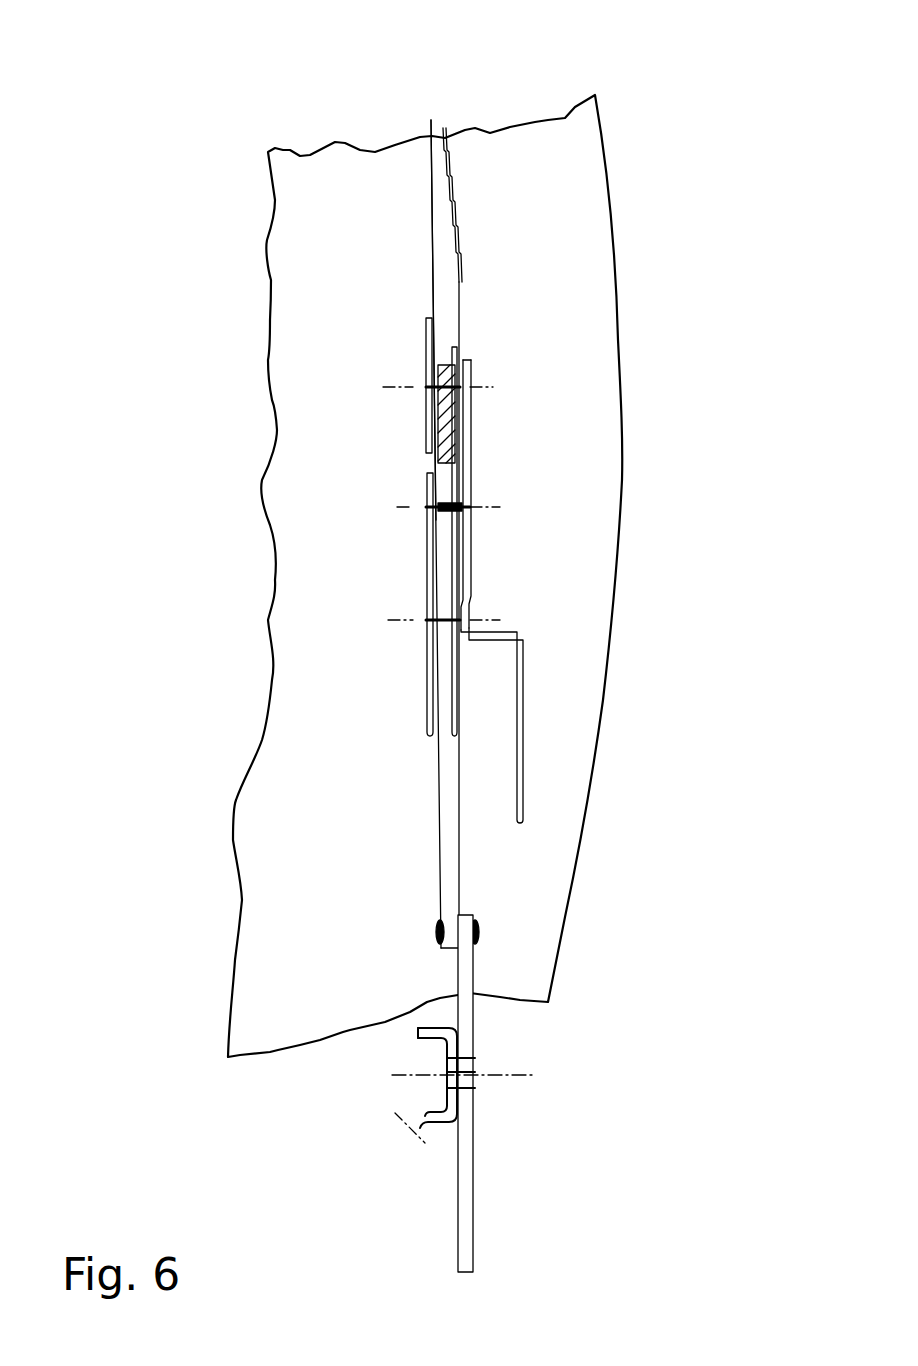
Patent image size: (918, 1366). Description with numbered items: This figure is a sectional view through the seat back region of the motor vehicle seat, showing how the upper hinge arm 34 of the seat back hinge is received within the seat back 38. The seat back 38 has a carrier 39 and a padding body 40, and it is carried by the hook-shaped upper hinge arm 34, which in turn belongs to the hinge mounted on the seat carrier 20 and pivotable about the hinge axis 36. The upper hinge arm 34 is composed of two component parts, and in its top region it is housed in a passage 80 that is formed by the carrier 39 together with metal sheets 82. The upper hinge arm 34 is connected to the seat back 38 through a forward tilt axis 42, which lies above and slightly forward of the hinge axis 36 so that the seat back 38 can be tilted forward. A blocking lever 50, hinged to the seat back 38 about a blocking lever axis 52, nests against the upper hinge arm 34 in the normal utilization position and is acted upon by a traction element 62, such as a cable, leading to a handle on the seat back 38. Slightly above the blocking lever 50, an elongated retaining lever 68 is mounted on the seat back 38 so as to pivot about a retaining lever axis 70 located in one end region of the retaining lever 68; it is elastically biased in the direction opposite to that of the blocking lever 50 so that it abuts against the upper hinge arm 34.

The seat carrier 20 is at (415, 1122).
The upper hinge arm 34 is at (450, 900).
The hinge axis 36 is at (523, 1075).
The seat back 38 is at (516, 106).
The carrier 39 is at (460, 280).
The padding body 40 is at (575, 250).
The forward tilt axis 42 is at (440, 617).
The blocking lever 50 is at (447, 483).
The blocking lever axis 52 is at (420, 510).
The traction element 62 is at (430, 125).
The retaining lever 68 is at (460, 397).
The retaining lever axis 70 is at (430, 393).
The passage 80 is at (432, 744).
The metal sheets 82 is at (460, 733).